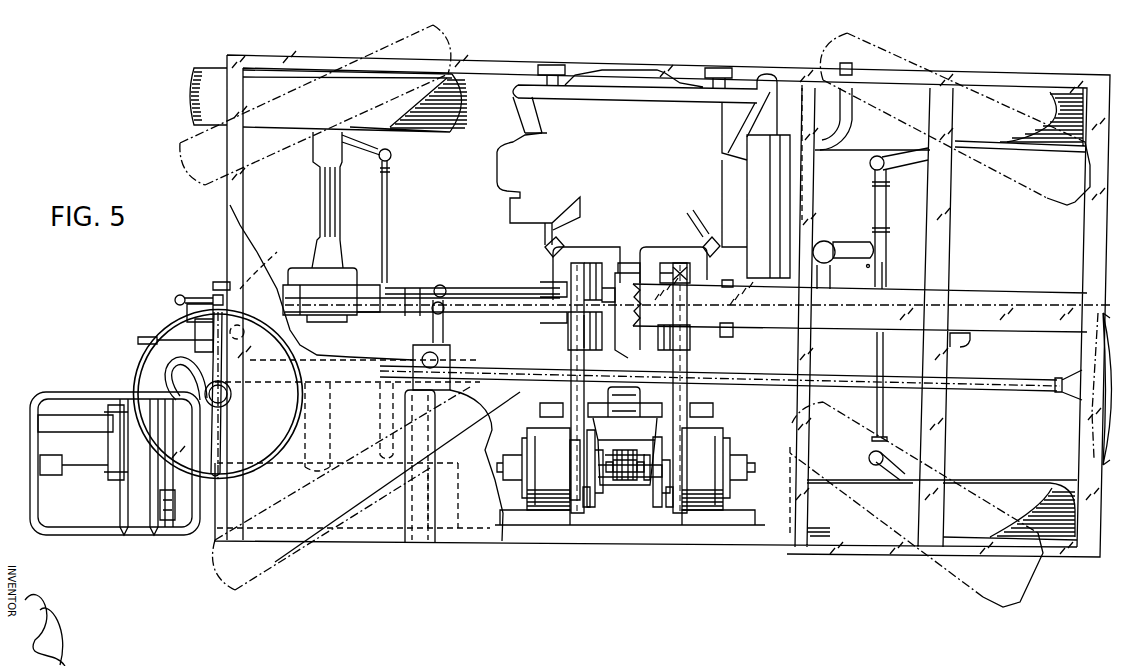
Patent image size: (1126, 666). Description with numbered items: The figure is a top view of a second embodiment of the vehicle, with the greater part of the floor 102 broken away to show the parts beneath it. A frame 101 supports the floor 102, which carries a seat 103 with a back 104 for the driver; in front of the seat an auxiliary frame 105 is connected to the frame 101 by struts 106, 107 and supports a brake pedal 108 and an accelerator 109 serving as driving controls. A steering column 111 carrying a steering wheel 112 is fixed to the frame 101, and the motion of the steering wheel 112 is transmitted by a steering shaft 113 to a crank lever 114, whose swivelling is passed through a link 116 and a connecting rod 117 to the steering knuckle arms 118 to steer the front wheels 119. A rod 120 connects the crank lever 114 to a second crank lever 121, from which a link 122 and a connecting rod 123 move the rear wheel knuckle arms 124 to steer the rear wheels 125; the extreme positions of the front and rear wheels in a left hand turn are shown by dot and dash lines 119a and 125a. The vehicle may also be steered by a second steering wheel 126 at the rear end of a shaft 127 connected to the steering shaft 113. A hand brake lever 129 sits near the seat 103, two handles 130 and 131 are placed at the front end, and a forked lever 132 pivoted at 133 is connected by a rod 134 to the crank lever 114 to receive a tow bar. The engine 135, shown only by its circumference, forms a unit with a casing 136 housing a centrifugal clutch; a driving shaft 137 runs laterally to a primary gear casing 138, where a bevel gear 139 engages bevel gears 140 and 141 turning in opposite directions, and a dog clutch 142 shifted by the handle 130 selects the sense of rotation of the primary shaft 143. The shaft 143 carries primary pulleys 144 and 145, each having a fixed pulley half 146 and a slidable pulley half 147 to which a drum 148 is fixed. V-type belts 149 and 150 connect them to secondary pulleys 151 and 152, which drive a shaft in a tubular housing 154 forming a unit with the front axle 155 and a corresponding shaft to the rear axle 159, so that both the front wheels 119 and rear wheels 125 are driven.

The frame 101 is at (808, 548).
The floor 102 is at (468, 527).
The seat 103 is at (350, 530).
The back 104 is at (415, 518).
The auxiliary frame 105 is at (84, 532).
The strut 106 is at (173, 505).
The strut 107 is at (172, 452).
The brake pedal 108 is at (62, 470).
The accelerator 109 is at (66, 415).
The steering column 111 is at (186, 379).
The steering wheel 112 is at (148, 370).
The steering shaft 113 is at (450, 356).
The crank lever 114 is at (443, 332).
The link 116 is at (385, 400).
The connecting rod 117 is at (389, 213).
The steering knuckle arm 118 is at (363, 150).
The front wheel 119 is at (197, 96).
The dot and dash lines 119a is at (208, 170).
The rod 120 is at (488, 298).
The second crank lever 121 is at (849, 250).
The link 122 is at (874, 188).
The connecting rod 123 is at (892, 263).
The rear wheel knuckle arm 124 is at (905, 160).
The rear wheel 125 is at (1023, 97).
The dot and dash lines 125a is at (1020, 162).
The second steering wheel 126 is at (1097, 452).
The shaft 127 is at (990, 387).
The hand brake lever 129 is at (154, 336).
The handle 130 is at (178, 296).
The handle 131 is at (185, 312).
The forked lever 132 is at (217, 282).
The pivot 133 is at (274, 266).
The rod 134 is at (398, 298).
The engine 135 is at (637, 159).
The casing 136 is at (548, 242).
The driving shaft 137 is at (632, 362).
The primary gear casing 138 is at (630, 488).
The bevel gear 139 is at (640, 450).
The bevel gear 140 is at (622, 485).
The bevel gear 141 is at (638, 488).
The dog clutch 142 is at (625, 486).
The primary shaft 143 is at (597, 508).
The primary pulley 144 is at (575, 502).
The primary pulley 145 is at (665, 498).
The fixed pulley half 146 is at (586, 506).
The slidable pulley half 147 is at (545, 512).
The drum 148 is at (543, 492).
The V-type belt 149 is at (571, 396).
The V-type belt 150 is at (687, 396).
The secondary pulley 151 is at (547, 340).
The secondary pulley 152 is at (707, 350).
The tubular housing 154 is at (445, 294).
The front axle 155 is at (332, 212).
The rear axle 159 is at (967, 340).